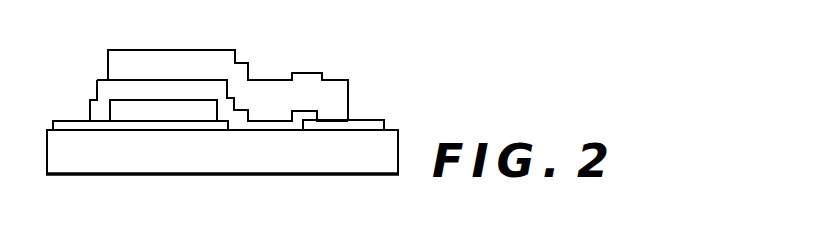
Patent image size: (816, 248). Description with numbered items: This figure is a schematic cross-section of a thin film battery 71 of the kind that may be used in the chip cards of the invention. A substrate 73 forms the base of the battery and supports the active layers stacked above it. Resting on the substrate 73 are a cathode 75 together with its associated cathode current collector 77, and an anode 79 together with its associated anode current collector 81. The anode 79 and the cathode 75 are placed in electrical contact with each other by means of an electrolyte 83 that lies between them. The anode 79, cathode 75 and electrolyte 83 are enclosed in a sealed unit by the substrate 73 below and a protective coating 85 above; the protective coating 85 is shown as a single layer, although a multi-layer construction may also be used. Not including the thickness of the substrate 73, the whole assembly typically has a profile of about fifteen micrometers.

The thin film battery 71 is at (147, 217).
The substrate 73 is at (67, 168).
The cathode 75 is at (118, 108).
The cathode current collector 77 is at (67, 121).
The anode 79 is at (335, 100).
The anode current collector 81 is at (385, 123).
The electrolyte 83 is at (135, 87).
The protective coating 85 is at (183, 65).